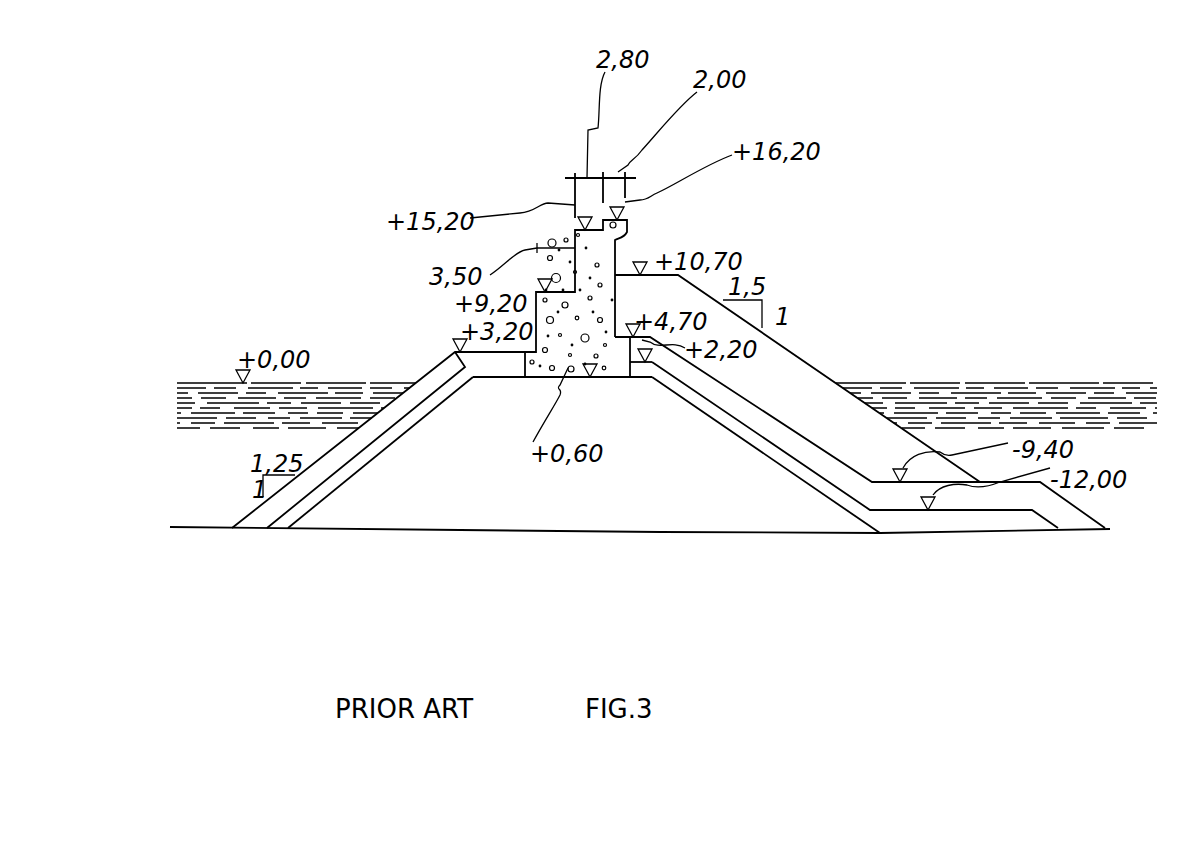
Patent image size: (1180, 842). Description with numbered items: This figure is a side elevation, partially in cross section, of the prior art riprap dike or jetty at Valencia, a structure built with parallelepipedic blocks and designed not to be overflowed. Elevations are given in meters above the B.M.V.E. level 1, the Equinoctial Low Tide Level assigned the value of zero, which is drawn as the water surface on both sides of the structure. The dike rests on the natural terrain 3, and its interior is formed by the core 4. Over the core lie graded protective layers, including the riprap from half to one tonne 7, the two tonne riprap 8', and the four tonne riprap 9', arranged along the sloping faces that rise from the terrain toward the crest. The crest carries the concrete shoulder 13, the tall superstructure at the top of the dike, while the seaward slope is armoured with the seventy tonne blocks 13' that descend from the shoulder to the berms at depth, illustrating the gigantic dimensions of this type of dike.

The B.M.V.E. level 1 is at (337, 385).
The natural terrain 3 is at (678, 532).
The core 4 is at (523, 507).
The riprap from 0.5 to 1.0 t 7 is at (338, 477).
The 2.0 t riprap 8' is at (384, 440).
The 4.0 t riprap 9' is at (835, 432).
The concrete shoulder 13 is at (637, 274).
The 70.0 t blocks 13' is at (797, 378).